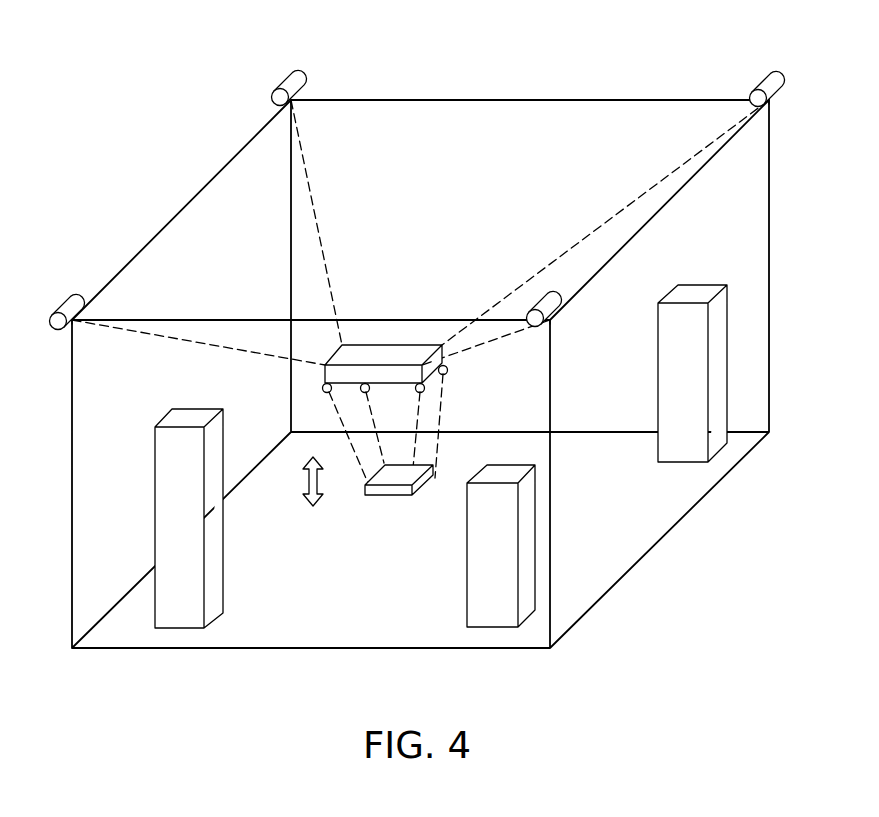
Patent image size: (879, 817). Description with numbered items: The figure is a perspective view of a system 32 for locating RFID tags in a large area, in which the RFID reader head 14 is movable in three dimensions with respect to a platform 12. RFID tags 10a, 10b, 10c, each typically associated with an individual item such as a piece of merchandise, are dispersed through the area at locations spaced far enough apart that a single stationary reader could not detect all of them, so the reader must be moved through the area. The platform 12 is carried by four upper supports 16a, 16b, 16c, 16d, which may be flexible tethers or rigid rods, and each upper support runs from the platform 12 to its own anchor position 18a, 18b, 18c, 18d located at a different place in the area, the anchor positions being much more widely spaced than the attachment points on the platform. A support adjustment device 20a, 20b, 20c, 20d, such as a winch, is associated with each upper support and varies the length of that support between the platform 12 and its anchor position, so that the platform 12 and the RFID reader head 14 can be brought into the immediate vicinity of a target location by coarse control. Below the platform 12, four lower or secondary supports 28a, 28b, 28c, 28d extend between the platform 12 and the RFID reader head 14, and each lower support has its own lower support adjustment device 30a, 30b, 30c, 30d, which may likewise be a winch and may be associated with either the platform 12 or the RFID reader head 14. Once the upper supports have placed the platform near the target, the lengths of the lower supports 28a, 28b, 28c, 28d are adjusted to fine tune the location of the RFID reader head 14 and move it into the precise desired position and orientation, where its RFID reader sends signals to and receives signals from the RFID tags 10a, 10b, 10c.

The RFID tag 10a is at (728, 398).
The RFID tag 10b is at (467, 597).
The RFID tag 10c is at (182, 630).
The platform 12 is at (382, 343).
The RFID reader head 14 is at (387, 498).
The support 16a is at (620, 212).
The support 16b is at (518, 330).
The support 16c is at (187, 341).
The support 16d is at (315, 208).
The anchor position 18a is at (777, 101).
The anchor position 18b is at (553, 322).
The anchor position 18c is at (76, 318).
The anchor position 18d is at (294, 98).
The support adjustment device 20a is at (773, 70).
The support adjustment device 20b is at (563, 300).
The support adjustment device 20c is at (57, 304).
The support adjustment device 20d is at (282, 80).
The lower support 28a is at (437, 438).
The lower support 28b is at (418, 453).
The lower support 28c is at (365, 473).
The lower support 28d is at (382, 456).
The lower support adjustment device 30a is at (448, 370).
The lower support adjustment device 30b is at (425, 390).
The lower support adjustment device 30c is at (321, 388).
The lower support adjustment device 30d is at (360, 387).
The system 32 is at (130, 160).